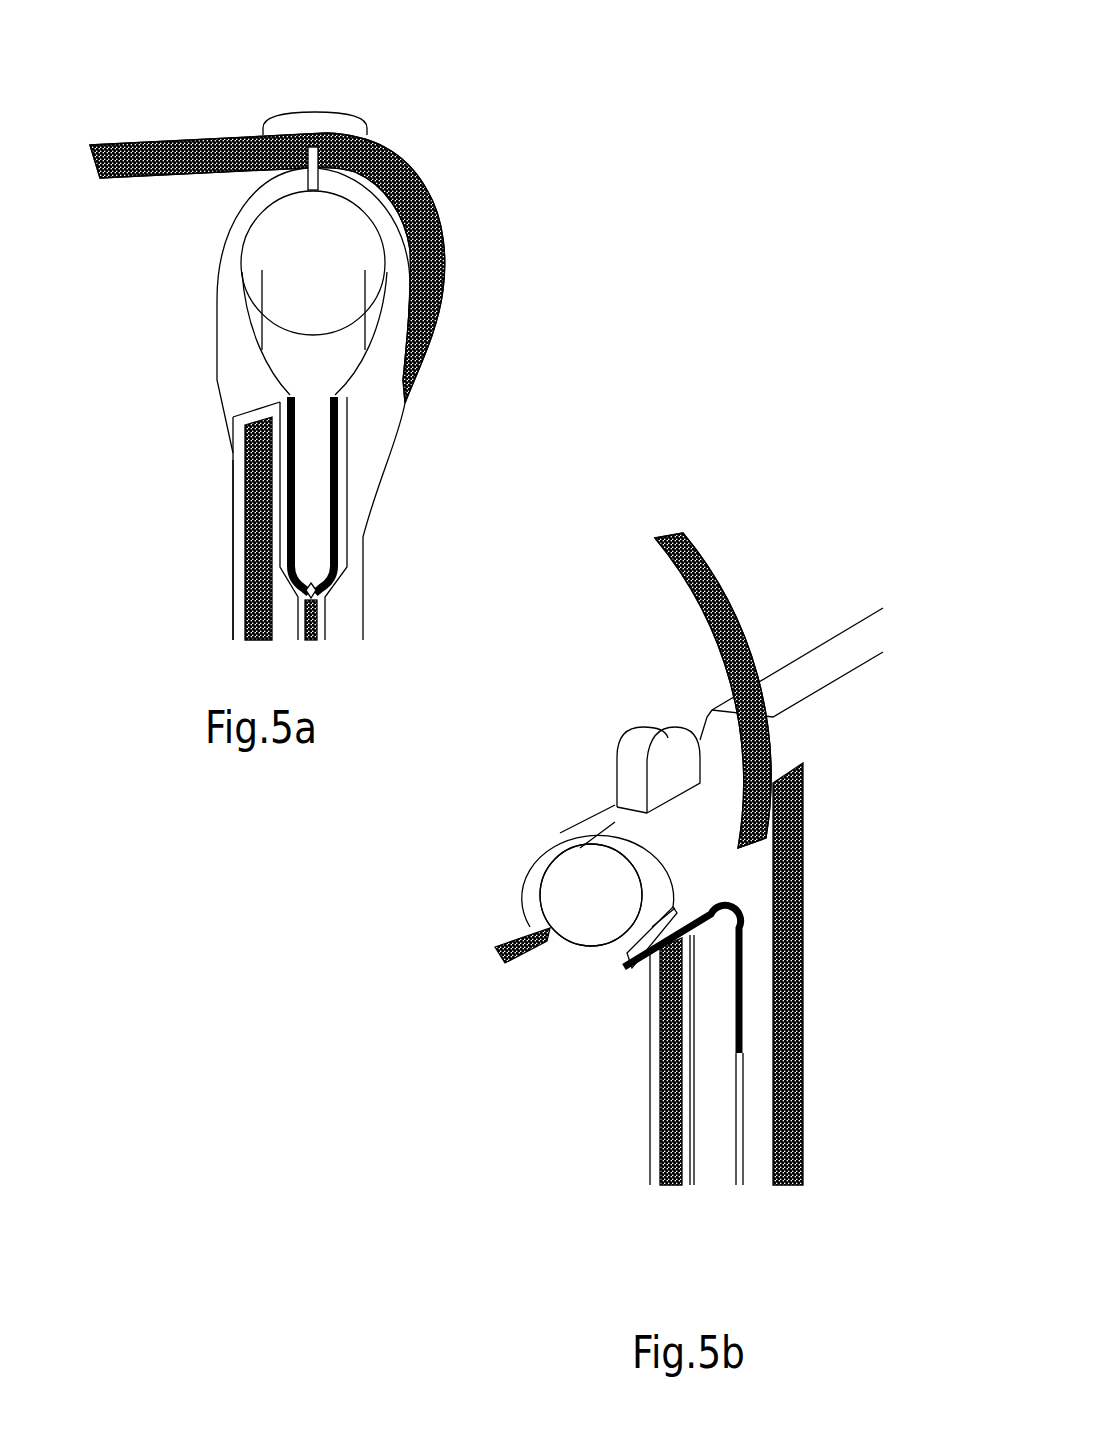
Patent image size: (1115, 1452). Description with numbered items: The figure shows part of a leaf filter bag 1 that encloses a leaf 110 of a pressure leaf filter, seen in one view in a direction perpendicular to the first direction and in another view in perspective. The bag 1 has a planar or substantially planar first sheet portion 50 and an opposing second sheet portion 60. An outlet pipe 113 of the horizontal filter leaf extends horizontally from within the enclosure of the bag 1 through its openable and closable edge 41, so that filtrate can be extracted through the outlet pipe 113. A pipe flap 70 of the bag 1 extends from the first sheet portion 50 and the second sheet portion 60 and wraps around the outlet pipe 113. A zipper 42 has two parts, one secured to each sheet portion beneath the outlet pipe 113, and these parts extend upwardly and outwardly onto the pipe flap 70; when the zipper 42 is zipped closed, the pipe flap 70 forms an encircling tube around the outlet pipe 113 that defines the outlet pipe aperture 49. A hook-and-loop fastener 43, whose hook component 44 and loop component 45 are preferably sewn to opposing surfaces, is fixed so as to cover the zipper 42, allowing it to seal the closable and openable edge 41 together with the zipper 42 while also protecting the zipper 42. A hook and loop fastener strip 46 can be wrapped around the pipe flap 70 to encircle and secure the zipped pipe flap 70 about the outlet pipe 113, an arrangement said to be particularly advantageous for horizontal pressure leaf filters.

In FIG. 5A, the leaf filter bag 1 is at (315, 331).
In FIG. 5B, the leaf filter bag 1 is at (584, 930).
In FIG. 5A, the leaf 110 is at (197, 84).
In FIG. 5B, the leaf 110 is at (397, 1234).
In FIG. 5B, the closable and openable edge 41 is at (387, 1074).
In FIG. 5A, the zipper 42 is at (336, 488).
In FIG. 5B, the zipper 42 is at (745, 1037).
In FIG. 5A, the hook-and-loop fastener 43 is at (262, 497).
In FIG. 5B, the hook-and-loop fastener 43 is at (660, 1112).
In FIG. 5B, the hook component 44 is at (591, 1127).
In FIG. 5B, the loop component 45 is at (847, 1019).
In FIG. 5A, the hook and loop fastener strip 46 is at (437, 257).
In FIG. 5B, the hook and loop fastener strip 46 is at (707, 620).
In FIG. 5B, the outlet pipe aperture 49 is at (511, 992).
In FIG. 5A, the first sheet portion 50 is at (150, 480).
In FIG. 5A, the second sheet portion 60 is at (466, 513).
In FIG. 5A, the pipe flap 70 is at (222, 228).
In FIG. 5B, the pipe flap 70 is at (540, 842).
In FIG. 5B, the outlet pipe 113 is at (588, 931).